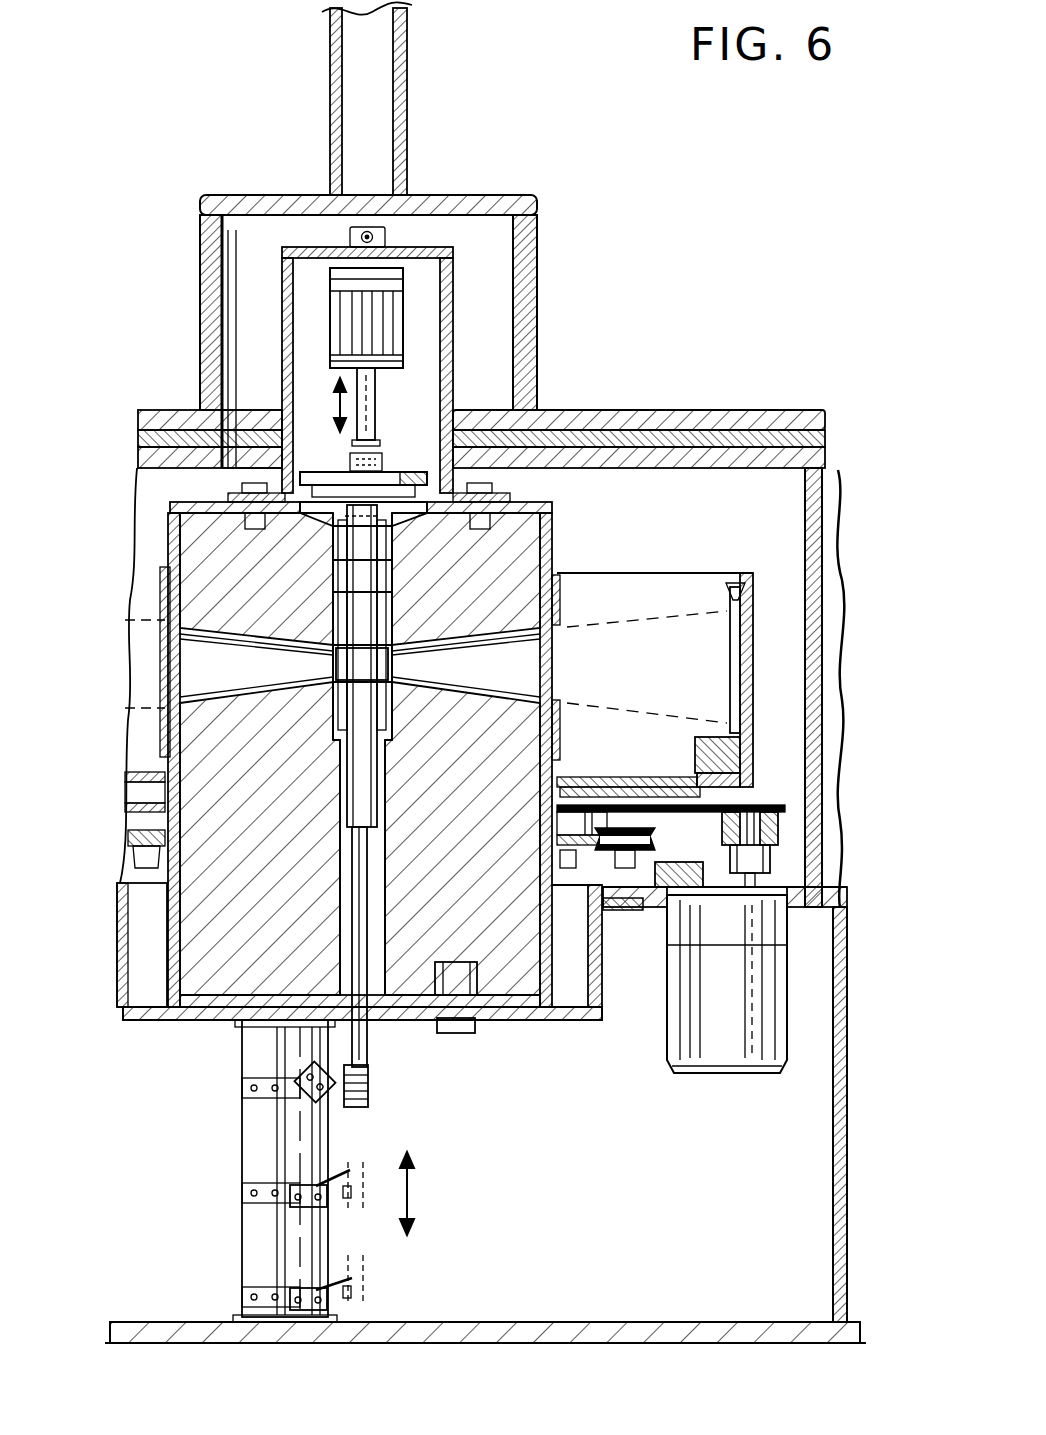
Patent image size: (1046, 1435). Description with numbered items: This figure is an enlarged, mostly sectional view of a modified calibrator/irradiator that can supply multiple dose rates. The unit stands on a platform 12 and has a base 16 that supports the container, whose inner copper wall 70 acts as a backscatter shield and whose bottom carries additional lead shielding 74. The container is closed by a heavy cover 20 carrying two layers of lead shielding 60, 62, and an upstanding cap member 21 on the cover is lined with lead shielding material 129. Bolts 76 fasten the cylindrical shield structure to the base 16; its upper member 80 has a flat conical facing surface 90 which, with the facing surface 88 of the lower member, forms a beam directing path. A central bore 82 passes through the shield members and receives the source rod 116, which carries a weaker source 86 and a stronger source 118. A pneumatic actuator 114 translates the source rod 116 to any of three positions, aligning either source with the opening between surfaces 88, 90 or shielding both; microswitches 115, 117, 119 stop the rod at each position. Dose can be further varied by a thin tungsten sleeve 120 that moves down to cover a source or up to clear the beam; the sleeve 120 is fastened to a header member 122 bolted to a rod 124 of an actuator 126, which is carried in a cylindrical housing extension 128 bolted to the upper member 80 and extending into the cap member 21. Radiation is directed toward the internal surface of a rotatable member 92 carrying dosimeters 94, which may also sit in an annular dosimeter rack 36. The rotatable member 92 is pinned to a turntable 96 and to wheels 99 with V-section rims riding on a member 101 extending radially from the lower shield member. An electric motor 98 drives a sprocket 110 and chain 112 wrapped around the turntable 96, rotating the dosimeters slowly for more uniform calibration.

The platform 12 is at (616, 1320).
The base 16 is at (833, 1150).
The cover 20 is at (632, 416).
The cap member 21 is at (540, 268).
The dosimeter rack 36 is at (697, 752).
The lead shielding layer 60 is at (748, 458).
The lead shielding layer 62 is at (680, 440).
The internal cylindrical wall 70 is at (805, 528).
The lead shielding 74 is at (662, 905).
The bolts 76 is at (460, 1035).
The upper member 80 is at (552, 528).
The central bore 82 is at (376, 1018).
The source of nuclear radiation 86 is at (386, 560).
The facing surface 88 is at (420, 688).
The facing surface 90 is at (560, 648).
The rotatable member 92 is at (752, 703).
The dosimeters 94 is at (730, 672).
The turntable 96 is at (162, 815).
The electric motor 98 is at (722, 1048).
The wheels 99 is at (622, 830).
The member 101 is at (590, 812).
The sprocket 110 is at (772, 860).
The chain 112 is at (675, 822).
The pneumatic actuator 114 is at (295, 1248).
The microswitch 115 is at (300, 1078).
The source rod 116 is at (350, 768).
The microswitch 117 is at (290, 1192).
The source 118 is at (336, 660).
The microswitch 119 is at (305, 1294).
The tungsten sleeve 120 is at (330, 566).
The header member 122 is at (396, 470).
The rod 124 is at (375, 388).
The actuator 126 is at (405, 304).
The housing extension 128 is at (270, 298).
The lead shielding material 129 is at (492, 185).